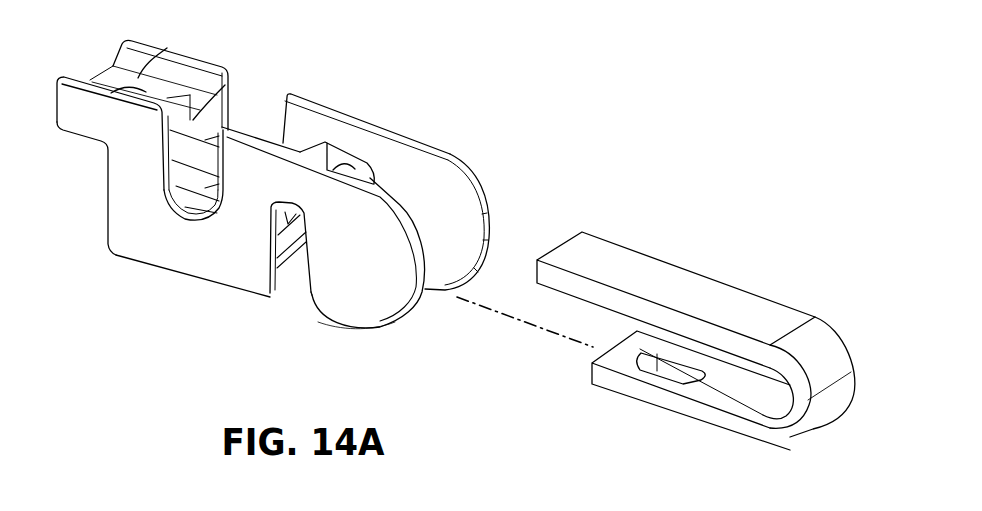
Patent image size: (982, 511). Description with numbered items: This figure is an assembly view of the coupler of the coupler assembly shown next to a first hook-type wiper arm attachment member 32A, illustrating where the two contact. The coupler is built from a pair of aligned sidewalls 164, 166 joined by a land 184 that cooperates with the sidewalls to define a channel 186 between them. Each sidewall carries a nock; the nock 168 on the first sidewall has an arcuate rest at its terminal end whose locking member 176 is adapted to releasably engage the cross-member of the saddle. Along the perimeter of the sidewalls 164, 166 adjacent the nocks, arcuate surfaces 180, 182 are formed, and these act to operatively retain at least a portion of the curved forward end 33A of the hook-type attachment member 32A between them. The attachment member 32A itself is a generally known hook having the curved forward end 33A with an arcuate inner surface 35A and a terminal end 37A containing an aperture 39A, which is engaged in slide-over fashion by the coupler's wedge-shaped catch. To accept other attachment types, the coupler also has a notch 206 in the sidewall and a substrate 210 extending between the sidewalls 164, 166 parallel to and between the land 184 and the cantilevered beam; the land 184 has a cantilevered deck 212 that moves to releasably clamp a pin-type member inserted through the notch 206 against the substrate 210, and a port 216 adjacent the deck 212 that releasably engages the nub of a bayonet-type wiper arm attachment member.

The sidewall 164 is at (203, 280).
The sidewall 166 is at (325, 106).
The nock 168 is at (289, 297).
The locking member 176 is at (276, 230).
The arcuate surface 180 is at (404, 310).
The arcuate surface 182 is at (484, 202).
The land 184 is at (112, 80).
The channel 186 is at (90, 67).
The notch 206 is at (180, 216).
The substrate 210 is at (185, 179).
The deck 212 is at (205, 100).
The port 216 is at (166, 50).
The first hook-type wiper arm attachment member 32A is at (767, 287).
The curved forward end 33A is at (823, 407).
The arcuate inner surface 35A is at (788, 430).
The terminal end 37A is at (593, 392).
The aperture 39A is at (673, 373).